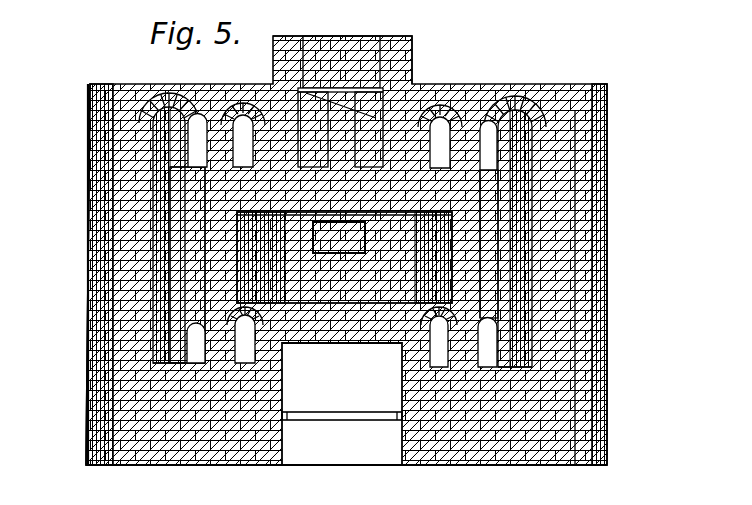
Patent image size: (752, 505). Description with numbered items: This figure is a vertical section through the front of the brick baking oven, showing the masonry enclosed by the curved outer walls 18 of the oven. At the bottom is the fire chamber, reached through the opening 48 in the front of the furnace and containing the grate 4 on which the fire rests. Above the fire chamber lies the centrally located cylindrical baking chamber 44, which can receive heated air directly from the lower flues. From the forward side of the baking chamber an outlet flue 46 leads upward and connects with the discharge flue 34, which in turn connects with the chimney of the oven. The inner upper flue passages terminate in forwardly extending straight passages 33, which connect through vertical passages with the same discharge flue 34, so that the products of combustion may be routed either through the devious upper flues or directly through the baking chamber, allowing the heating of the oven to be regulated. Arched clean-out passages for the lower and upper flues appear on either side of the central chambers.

The grate 4 is at (342, 409).
The outer walls 18 is at (578, 208).
The forwardly extending straight passages 33 is at (299, 90).
The discharge flue 34 is at (345, 78).
The baking chamber 44 is at (344, 257).
The outlet flue 46 is at (339, 237).
The opening 48 is at (342, 404).